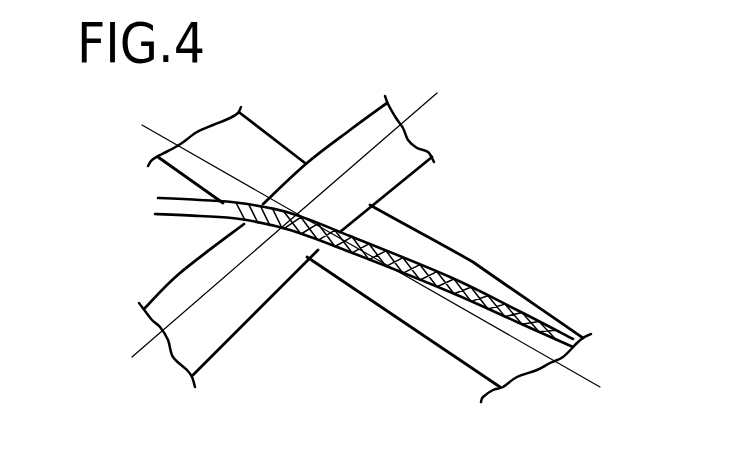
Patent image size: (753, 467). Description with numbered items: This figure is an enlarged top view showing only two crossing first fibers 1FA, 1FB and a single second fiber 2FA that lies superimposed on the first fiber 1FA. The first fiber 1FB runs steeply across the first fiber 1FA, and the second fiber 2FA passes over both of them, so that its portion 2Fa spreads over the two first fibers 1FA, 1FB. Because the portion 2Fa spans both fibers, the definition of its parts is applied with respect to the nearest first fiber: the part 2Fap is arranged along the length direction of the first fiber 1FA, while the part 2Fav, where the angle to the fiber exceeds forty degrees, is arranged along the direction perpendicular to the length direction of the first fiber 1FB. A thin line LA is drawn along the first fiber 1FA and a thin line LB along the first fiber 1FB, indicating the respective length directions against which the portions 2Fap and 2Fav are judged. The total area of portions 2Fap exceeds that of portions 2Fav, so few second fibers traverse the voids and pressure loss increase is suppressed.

The first fiber 1FA is at (405, 237).
The first fiber 1FB is at (340, 157).
The second fiber 2FA is at (180, 208).
The portion of the second fiber 2Fa is at (396, 326).
The portion of the second fiber arranged perpendicular to the first fiber 2Fav is at (292, 214).
The portion of the second fiber arranged along the first fiber 2Fap is at (420, 301).
The axis line A LA is at (357, 238).
The axis line B LB is at (308, 217).